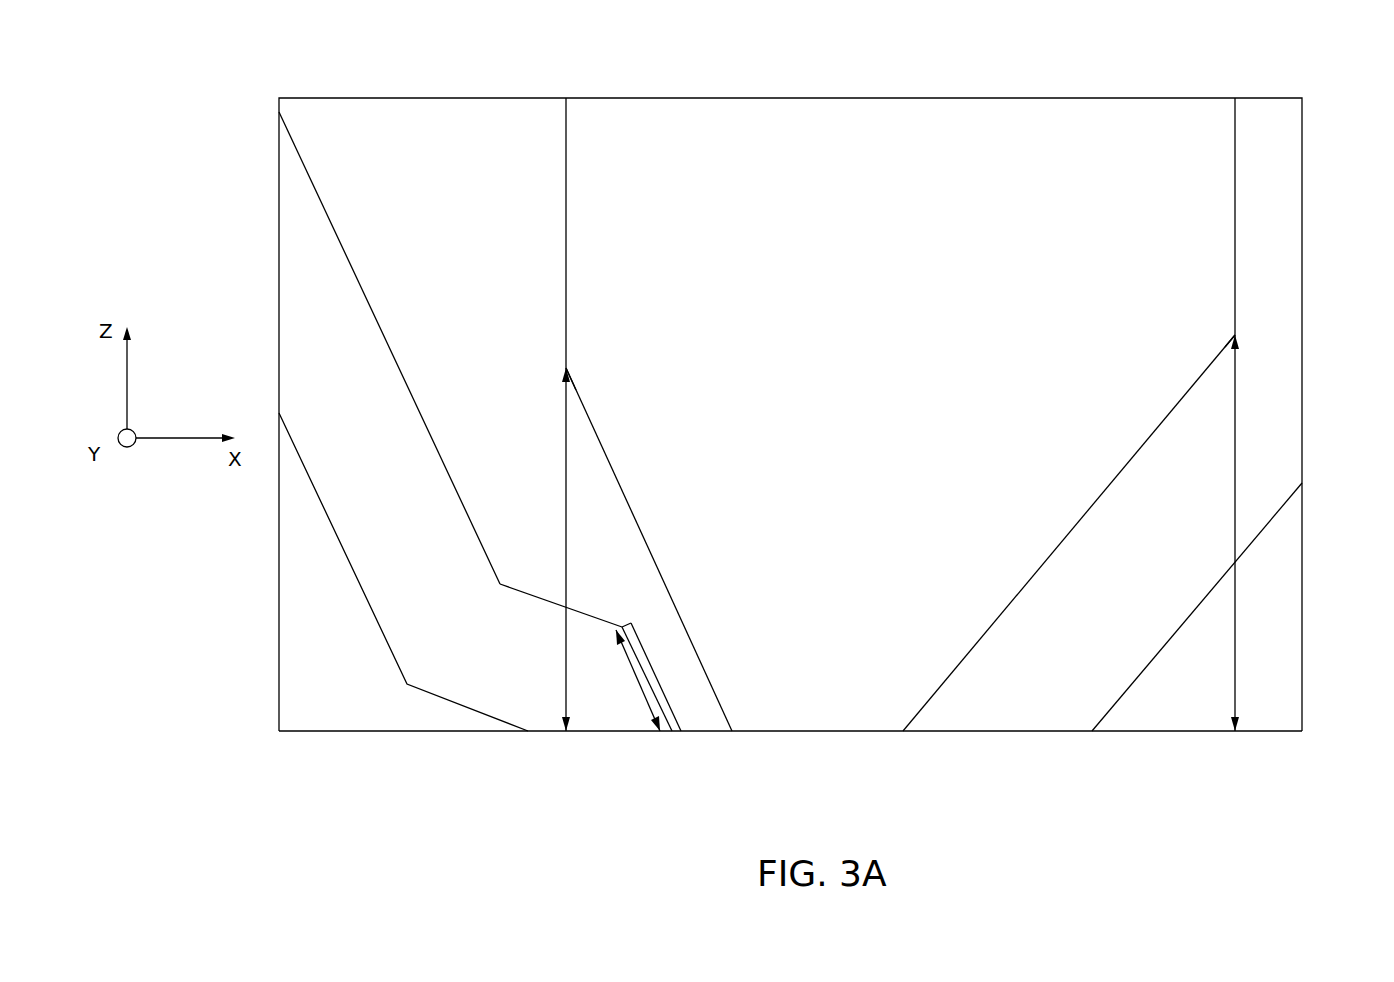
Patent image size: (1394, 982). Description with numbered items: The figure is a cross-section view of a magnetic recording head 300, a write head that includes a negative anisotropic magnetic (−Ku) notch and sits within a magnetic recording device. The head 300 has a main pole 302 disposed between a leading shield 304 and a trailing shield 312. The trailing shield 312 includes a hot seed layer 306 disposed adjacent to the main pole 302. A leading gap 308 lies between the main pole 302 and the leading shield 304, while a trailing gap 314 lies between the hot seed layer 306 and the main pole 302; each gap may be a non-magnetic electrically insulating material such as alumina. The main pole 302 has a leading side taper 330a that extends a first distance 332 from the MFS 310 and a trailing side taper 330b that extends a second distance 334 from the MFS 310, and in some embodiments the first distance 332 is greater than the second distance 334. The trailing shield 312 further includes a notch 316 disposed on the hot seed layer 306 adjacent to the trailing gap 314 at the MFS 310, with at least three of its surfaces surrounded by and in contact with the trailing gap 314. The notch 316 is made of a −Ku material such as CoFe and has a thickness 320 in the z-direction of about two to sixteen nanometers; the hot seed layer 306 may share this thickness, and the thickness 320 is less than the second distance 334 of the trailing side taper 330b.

The magnetic recording head 300 is at (1280, 74).
The main pole 302 is at (887, 507).
The leading shield 304 is at (1213, 707).
The hot seed layer 306 is at (529, 673).
The leading gap 308 is at (1117, 617).
The MFS 310 is at (813, 732).
The trailing shield 312 is at (355, 696).
The trailing gap 314 is at (459, 233).
The notch 316 is at (630, 626).
The thickness 320 is at (640, 688).
The leading side taper 330a is at (1233, 334).
The trailing side taper 330b is at (569, 366).
The first distance 332 is at (1235, 481).
The second distance 334 is at (565, 479).